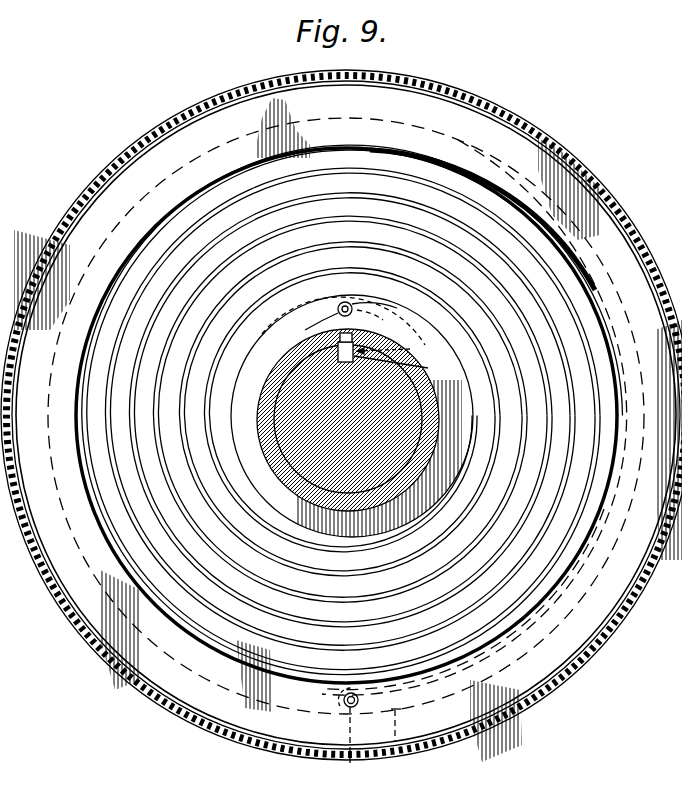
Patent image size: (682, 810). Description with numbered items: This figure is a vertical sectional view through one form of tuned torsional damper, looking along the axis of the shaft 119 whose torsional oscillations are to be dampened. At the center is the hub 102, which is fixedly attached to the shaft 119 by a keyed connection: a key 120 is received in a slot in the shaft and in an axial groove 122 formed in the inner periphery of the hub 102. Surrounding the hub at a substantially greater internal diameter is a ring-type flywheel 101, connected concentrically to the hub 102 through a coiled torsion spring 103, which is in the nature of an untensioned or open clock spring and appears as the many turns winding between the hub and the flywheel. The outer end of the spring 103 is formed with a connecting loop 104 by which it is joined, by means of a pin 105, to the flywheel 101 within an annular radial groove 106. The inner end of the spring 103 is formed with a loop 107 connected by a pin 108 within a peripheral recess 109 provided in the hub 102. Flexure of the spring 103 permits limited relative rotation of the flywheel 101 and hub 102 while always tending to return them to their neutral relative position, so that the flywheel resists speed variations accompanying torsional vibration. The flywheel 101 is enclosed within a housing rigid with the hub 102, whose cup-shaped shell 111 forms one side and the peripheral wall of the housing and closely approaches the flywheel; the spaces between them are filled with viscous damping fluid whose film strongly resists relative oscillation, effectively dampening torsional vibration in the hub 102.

The flywheel 101 is at (213, 697).
The hub 102 is at (278, 466).
The coiled torsion spring 103 is at (370, 206).
The connecting loop 104 is at (344, 750).
The pin 105 is at (350, 708).
The annular radial groove 106 is at (390, 760).
The loop 107 is at (403, 350).
The pin 108 is at (337, 316).
The peripheral recess 109 is at (336, 311).
The cup-shaped shell 111 is at (82, 635).
The shaft 119 is at (310, 410).
The key 120 is at (408, 366).
The axial groove 122 is at (340, 337).